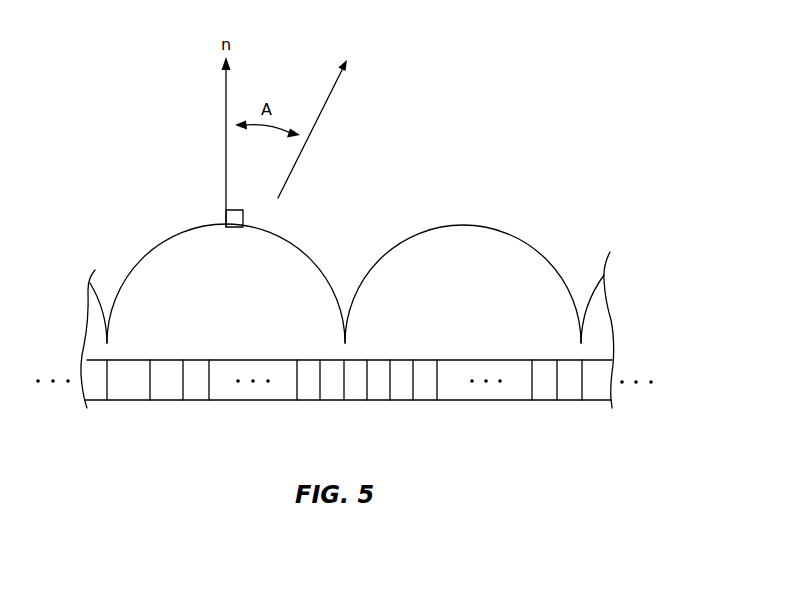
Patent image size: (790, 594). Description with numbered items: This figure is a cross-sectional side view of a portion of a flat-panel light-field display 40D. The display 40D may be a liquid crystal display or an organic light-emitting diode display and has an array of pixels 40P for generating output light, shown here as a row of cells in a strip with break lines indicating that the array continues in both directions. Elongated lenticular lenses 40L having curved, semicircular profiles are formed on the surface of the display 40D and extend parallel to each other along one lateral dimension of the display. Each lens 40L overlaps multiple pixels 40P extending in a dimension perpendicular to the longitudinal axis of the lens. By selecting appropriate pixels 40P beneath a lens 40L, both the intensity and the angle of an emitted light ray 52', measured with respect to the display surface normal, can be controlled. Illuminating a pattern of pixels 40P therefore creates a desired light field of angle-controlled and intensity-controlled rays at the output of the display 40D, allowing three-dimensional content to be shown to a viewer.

The lenticular lenses 40L is at (170, 250).
The pixels 40P is at (167, 390).
The flat-panel light-field display 40D is at (658, 363).
The light ray 52' is at (335, 121).